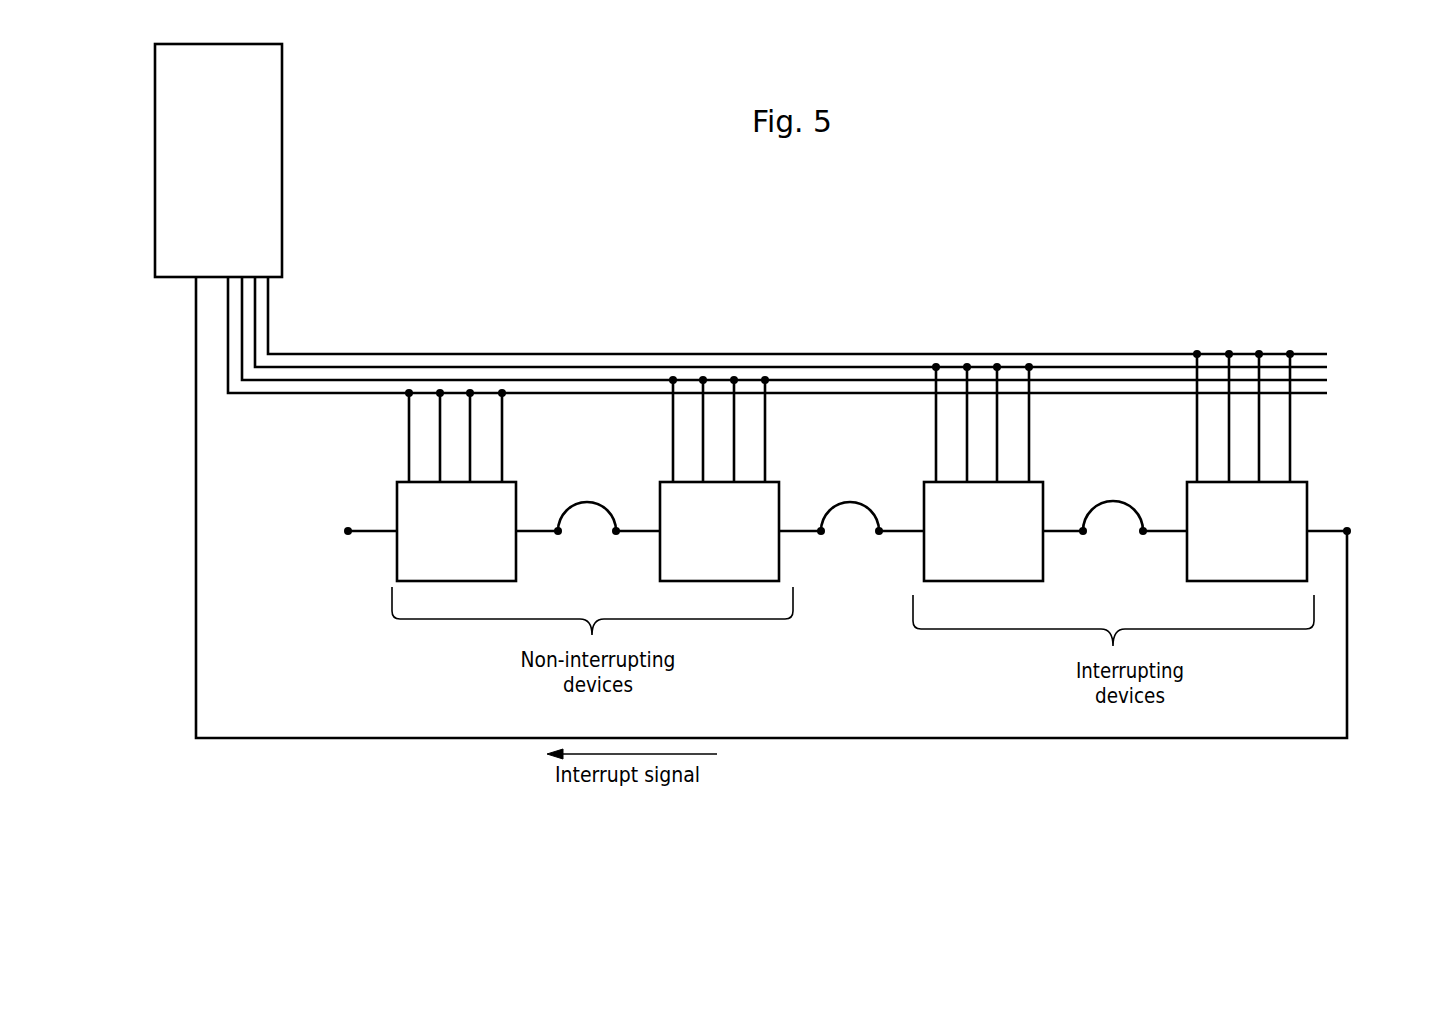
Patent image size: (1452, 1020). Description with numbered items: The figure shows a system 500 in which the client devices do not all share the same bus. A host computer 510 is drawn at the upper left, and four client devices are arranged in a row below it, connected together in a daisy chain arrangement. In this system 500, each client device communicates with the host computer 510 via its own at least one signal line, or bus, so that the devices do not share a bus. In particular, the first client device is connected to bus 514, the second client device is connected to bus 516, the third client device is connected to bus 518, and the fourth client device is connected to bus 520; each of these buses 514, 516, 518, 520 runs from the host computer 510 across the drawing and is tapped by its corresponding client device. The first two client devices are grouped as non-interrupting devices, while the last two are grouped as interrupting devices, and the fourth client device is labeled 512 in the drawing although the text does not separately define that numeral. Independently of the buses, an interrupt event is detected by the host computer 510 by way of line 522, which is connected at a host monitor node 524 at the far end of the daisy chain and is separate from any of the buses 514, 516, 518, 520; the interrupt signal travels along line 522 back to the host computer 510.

The system 500 is at (1038, 257).
The host computer 510 is at (218, 160).
The client device (non-interrupting) 512 is at (456, 485).
The bus 514 is at (1325, 393).
The bus 516 is at (1328, 379).
The bus 518 is at (1328, 366).
The bus 520 is at (1318, 353).
The line 522 is at (1120, 738).
The host monitor node 524 is at (1357, 515).